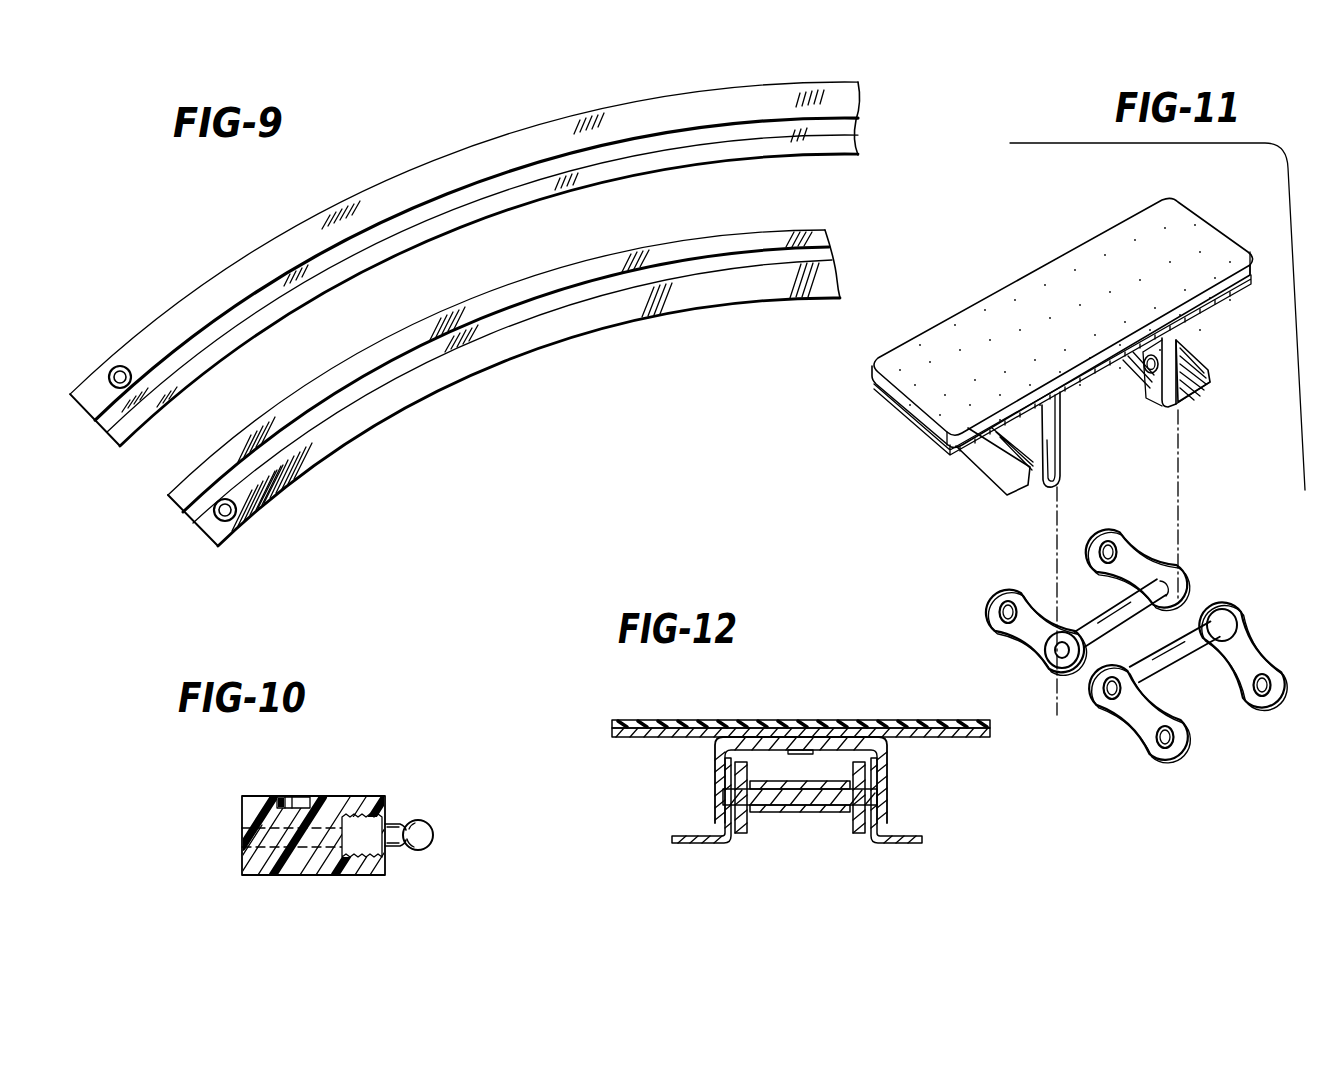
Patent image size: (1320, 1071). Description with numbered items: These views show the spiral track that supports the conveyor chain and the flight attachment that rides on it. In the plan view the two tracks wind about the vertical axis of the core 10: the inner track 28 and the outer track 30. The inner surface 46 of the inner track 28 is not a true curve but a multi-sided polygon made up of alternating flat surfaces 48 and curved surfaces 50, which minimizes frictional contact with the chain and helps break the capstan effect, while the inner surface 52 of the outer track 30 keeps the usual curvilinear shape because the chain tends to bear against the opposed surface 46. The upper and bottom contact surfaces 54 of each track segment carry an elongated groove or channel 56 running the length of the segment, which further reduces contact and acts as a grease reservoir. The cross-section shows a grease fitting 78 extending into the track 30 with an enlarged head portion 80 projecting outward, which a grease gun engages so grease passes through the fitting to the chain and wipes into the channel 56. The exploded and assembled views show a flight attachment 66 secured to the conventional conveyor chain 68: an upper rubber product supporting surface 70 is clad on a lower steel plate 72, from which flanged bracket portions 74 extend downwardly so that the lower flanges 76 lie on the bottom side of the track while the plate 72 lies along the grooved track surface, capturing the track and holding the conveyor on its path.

In FIG. 9, the core 10 is at (520, 242).
In FIG. 9, the inner track 28 is at (260, 508).
In FIG. 10, the inner track 28 is at (242, 803).
In FIG. 9, the outer track 30 is at (148, 305).
In FIG. 9, the inner surface 46 is at (163, 442).
In FIG. 9, the flat surfaces 48 is at (287, 397).
In FIG. 9, the curved surfaces 50 is at (432, 315).
In FIG. 9, the inner surface 52 is at (346, 276).
In FIG. 9, the upper and bottom contact surfaces 54 is at (620, 105).
In FIG. 9, the groove or channel 56 is at (280, 290).
In FIG. 10, the groove or channel 56 is at (293, 803).
In FIG. 11, the flight attachment 66 is at (962, 460).
In FIG. 12, the flight attachment 66 is at (705, 743).
In FIG. 11, the conveyor chain 68 is at (1205, 597).
In FIG. 12, the conveyor chain 68 is at (805, 815).
In FIG. 11, the rubber product supporting surface 70 is at (1060, 260).
In FIG. 12, the rubber product supporting surface 70 is at (828, 720).
In FIG. 11, the steel plate 72 is at (930, 428).
In FIG. 12, the steel plate 72 is at (987, 738).
In FIG. 11, the flanged bracket portions 74 is at (1150, 387).
In FIG. 11, the lower flanges 76 is at (1197, 370).
In FIG. 12, the lower flanges 76 is at (673, 828).
In FIG. 10, the grease fitting 78 is at (422, 816).
In FIG. 10, the enlarged head portion 80 is at (423, 848).